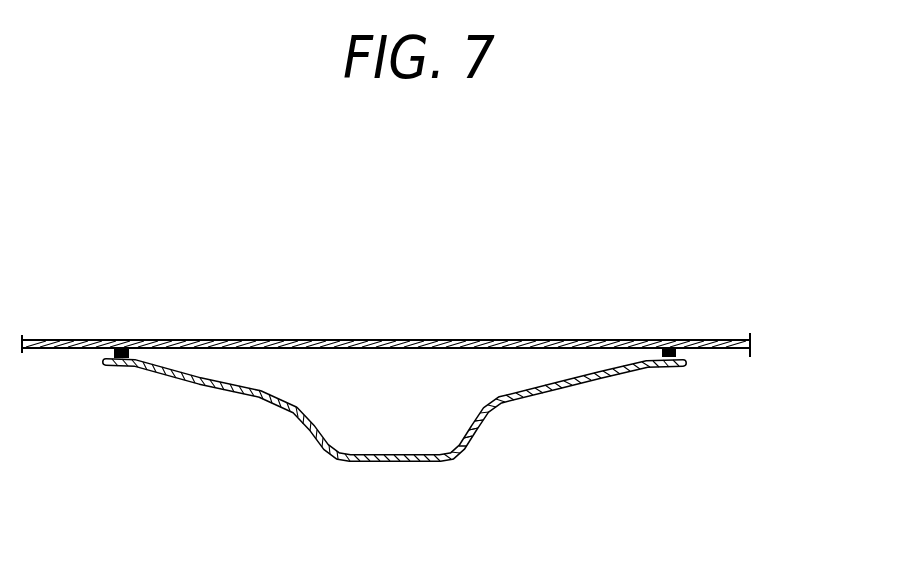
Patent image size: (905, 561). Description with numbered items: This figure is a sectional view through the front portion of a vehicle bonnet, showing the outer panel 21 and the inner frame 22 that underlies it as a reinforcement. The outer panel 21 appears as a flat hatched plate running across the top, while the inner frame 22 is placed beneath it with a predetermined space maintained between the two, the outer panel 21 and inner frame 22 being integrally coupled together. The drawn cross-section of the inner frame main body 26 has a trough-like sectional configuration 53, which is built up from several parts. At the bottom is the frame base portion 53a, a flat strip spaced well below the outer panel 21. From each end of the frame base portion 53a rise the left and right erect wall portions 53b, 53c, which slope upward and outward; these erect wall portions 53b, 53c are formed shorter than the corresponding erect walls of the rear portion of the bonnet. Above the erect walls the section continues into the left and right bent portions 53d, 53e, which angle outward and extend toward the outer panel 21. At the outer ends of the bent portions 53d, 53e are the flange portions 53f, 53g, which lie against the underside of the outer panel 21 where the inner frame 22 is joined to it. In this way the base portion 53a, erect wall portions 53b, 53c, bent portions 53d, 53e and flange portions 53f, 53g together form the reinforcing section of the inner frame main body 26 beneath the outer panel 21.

The sectional configuration of the front portion of the inner frame main body 53 is at (796, 228).
The outer panel 21 is at (420, 339).
The inner frame 22 is at (690, 402).
The inner frame main body 26 is at (645, 455).
The frame base portion 53a is at (405, 463).
The left erect wall portion 53b is at (308, 428).
The right erect wall portion 53c is at (485, 422).
The left bent portion 53d is at (202, 385).
The right bent portion 53e is at (578, 386).
The left flange portion 53f is at (106, 345).
The right flange portion 53g is at (688, 343).